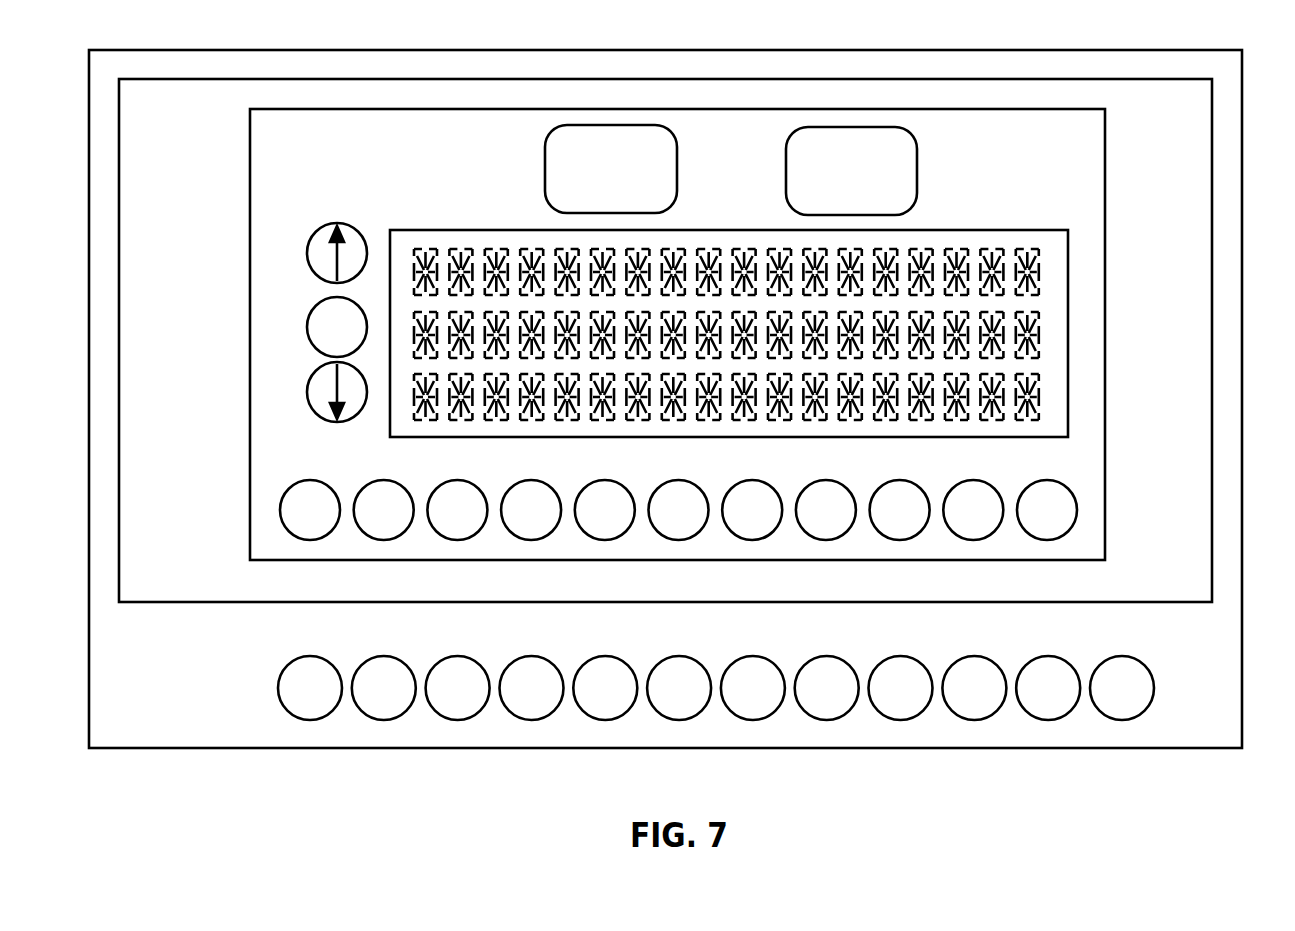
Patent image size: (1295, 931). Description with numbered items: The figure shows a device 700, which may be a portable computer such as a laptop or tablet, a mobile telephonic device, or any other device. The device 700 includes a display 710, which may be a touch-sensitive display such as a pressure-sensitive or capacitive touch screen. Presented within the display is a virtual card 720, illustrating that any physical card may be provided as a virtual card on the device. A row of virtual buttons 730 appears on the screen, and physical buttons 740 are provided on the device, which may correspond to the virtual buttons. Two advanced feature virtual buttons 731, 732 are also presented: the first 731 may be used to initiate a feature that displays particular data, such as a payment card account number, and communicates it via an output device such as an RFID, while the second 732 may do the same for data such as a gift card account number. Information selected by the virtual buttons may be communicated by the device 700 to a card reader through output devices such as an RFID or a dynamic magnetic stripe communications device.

The device 700 is at (1261, 385).
The display 710 is at (120, 583).
The virtual card 720 is at (250, 336).
The virtual buttons 730 is at (283, 520).
The advanced feature virtual button 731 is at (548, 178).
The advanced feature virtual button 732 is at (788, 170).
The physical buttons 740 is at (283, 700).